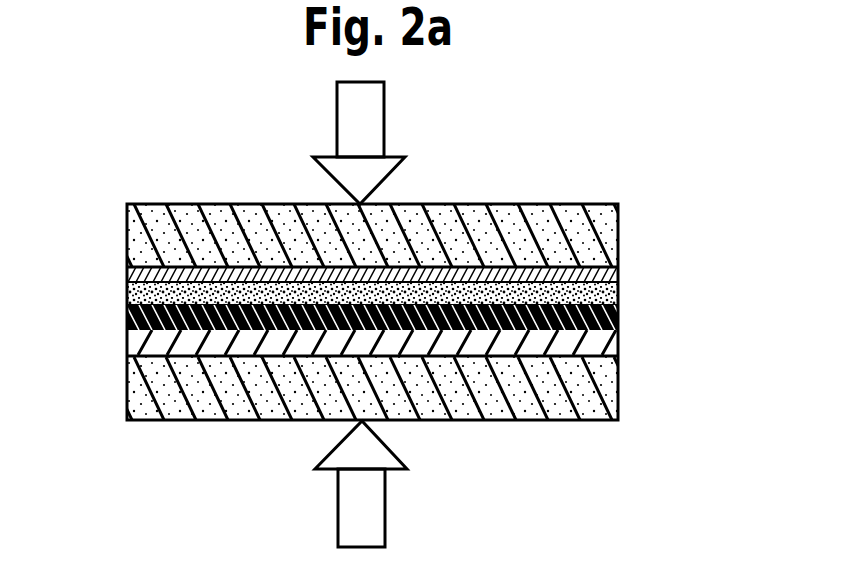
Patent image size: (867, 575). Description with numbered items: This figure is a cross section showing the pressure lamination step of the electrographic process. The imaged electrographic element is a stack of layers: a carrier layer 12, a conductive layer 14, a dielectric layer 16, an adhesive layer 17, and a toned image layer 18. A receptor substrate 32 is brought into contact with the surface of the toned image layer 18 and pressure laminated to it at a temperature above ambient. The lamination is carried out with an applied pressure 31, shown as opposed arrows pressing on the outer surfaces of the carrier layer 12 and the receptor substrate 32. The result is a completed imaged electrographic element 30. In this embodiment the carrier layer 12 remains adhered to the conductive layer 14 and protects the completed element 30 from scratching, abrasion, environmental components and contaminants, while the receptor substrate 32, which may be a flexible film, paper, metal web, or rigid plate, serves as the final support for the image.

The carrier layer 12 is at (275, 416).
The conductive layer 14 is at (127, 343).
The dielectric layer 16 is at (620, 318).
The adhesive layer 17 is at (127, 293).
The toned image layer 18 is at (127, 270).
The completed imaged electrographic element 30 is at (630, 380).
The applied pressure 31 is at (384, 110).
The receptor substrate 32 is at (620, 247).